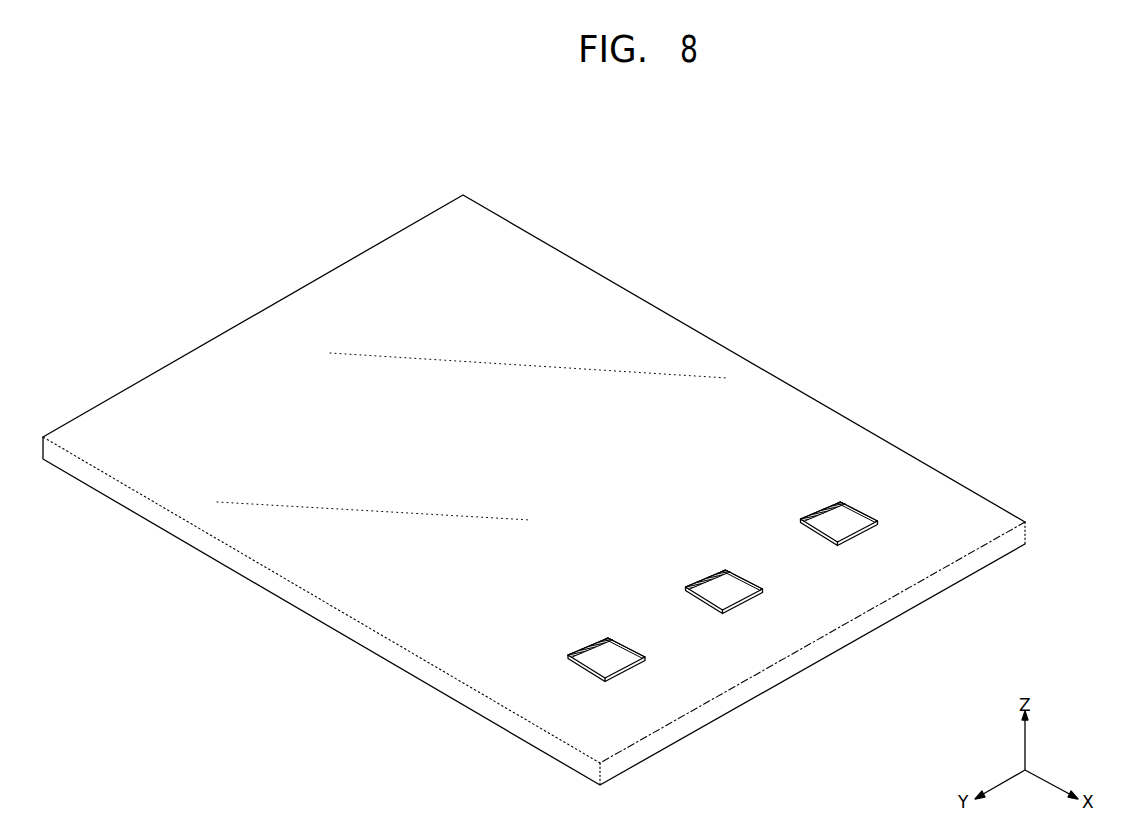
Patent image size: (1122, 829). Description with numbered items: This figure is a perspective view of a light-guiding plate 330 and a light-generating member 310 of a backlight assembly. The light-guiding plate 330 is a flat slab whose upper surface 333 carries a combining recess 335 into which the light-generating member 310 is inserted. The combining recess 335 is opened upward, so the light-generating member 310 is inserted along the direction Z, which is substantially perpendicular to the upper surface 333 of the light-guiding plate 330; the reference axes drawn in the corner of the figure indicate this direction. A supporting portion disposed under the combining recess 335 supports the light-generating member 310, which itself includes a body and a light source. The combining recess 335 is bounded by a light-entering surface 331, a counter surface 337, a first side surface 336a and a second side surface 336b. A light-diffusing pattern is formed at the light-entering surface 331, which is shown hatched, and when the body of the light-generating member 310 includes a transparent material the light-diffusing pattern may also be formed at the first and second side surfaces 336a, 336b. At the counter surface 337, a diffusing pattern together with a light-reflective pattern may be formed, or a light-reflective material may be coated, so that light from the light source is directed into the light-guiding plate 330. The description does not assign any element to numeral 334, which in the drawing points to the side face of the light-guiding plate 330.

The light-guiding plate 330 is at (559, 490).
The light-entering surface 331 is at (724, 564).
The upper surface 333 is at (937, 480).
The side surface 334 is at (996, 551).
The combining recess 335 is at (859, 468).
The first side surface 336a is at (580, 605).
The second side surface 336b is at (629, 606).
The counter surface 337 is at (641, 711).
The light-generating member 310 is at (634, 669).